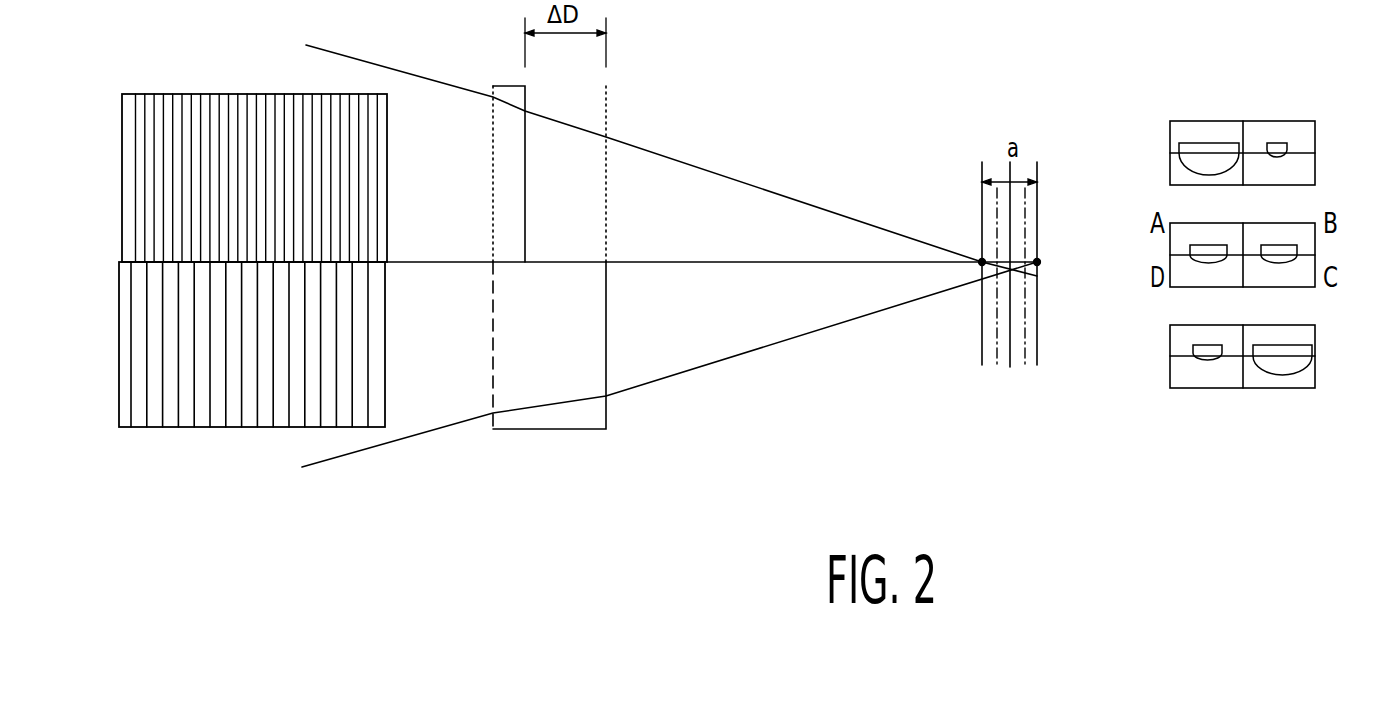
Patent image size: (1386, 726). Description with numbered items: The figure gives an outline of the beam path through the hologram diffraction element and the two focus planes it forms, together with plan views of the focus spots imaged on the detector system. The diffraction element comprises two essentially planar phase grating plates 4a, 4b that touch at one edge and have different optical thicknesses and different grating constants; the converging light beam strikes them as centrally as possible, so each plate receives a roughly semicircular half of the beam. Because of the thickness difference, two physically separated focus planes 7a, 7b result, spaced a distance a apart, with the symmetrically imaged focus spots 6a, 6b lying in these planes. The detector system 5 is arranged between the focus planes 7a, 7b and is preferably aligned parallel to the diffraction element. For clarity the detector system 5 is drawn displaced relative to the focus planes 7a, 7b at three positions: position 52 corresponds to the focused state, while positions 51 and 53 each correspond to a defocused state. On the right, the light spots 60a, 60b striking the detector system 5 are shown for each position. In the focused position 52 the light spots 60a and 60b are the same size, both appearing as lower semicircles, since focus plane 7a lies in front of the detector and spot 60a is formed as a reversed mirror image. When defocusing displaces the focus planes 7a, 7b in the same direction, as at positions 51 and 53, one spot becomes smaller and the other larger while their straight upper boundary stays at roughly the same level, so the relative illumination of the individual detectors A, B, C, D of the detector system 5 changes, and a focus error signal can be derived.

The phase grating plate 4a is at (122, 165).
The phase grating plate 4b is at (119, 343).
The detector system 5 is at (1008, 338).
The focus spot 6a is at (982, 262).
The focus spot 6b is at (1037, 262).
The focus plane 7a is at (982, 175).
The focus plane 7b is at (1037, 173).
The position of the detector system 51 is at (996, 360).
The position of the detector system 52 is at (1010, 363).
The position of the detector system 53 is at (1025, 353).
The light spot 60a is at (1282, 143).
The light spot 60b is at (1197, 143).